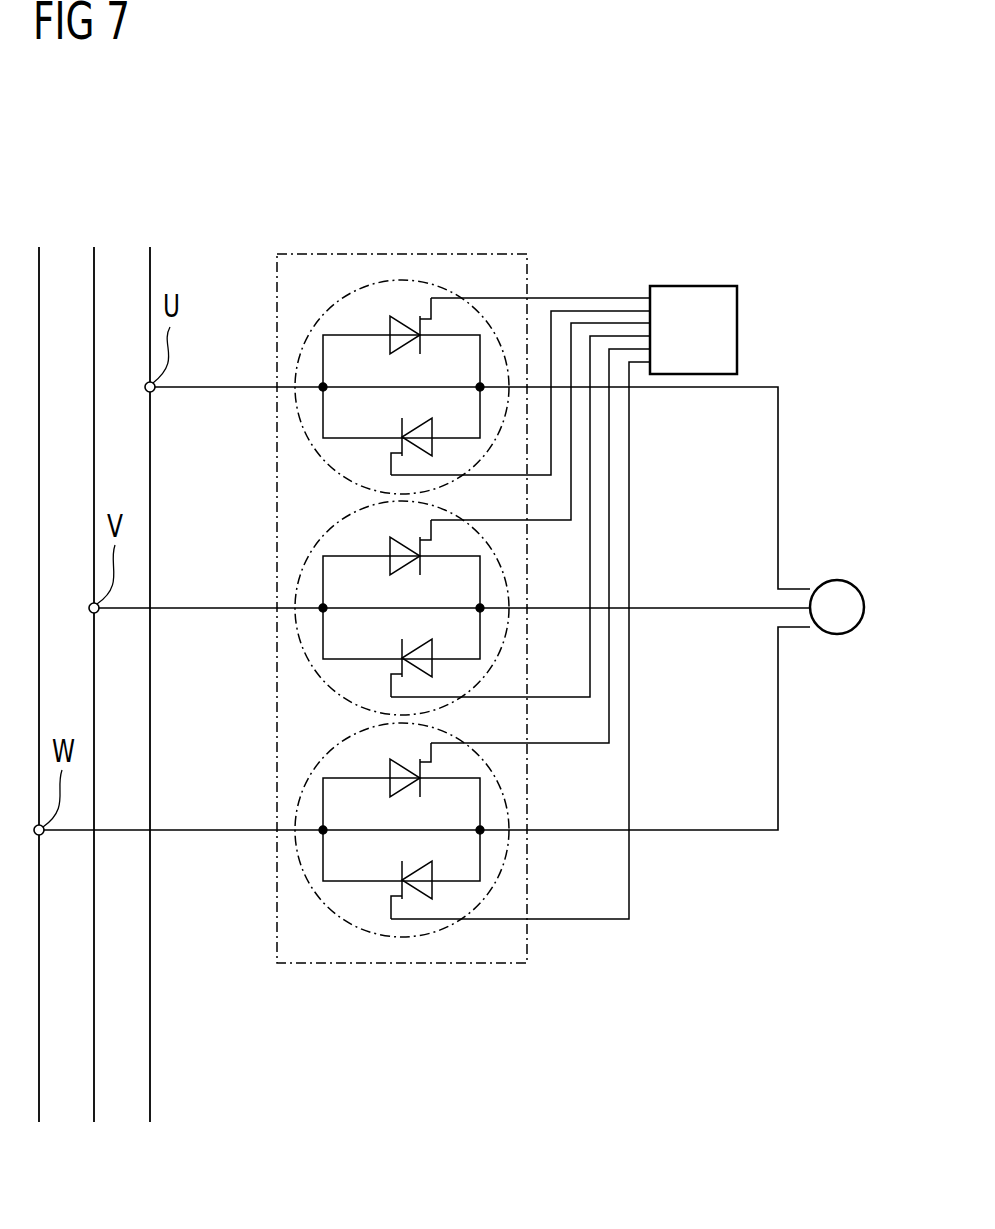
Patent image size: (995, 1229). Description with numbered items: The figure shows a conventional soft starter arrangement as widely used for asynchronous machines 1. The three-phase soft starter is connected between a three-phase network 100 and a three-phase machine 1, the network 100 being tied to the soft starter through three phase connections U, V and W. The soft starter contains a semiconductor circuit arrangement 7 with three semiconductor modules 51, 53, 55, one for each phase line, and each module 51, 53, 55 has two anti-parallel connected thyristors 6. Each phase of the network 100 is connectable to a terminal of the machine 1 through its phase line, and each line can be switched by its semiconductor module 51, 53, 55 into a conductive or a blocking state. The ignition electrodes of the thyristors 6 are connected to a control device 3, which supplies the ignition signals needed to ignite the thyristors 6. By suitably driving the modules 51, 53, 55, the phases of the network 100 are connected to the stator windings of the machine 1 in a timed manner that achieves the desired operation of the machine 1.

The three-phase network 100 is at (155, 237).
The semiconductor circuit arrangement 7 is at (459, 253).
The semiconductor module 51 is at (400, 279).
The semiconductor module 53 is at (298, 640).
The semiconductor module 55 is at (390, 938).
The thyristor 6 is at (417, 423).
The control device 3 is at (695, 285).
The three-phase machine 1 is at (837, 580).